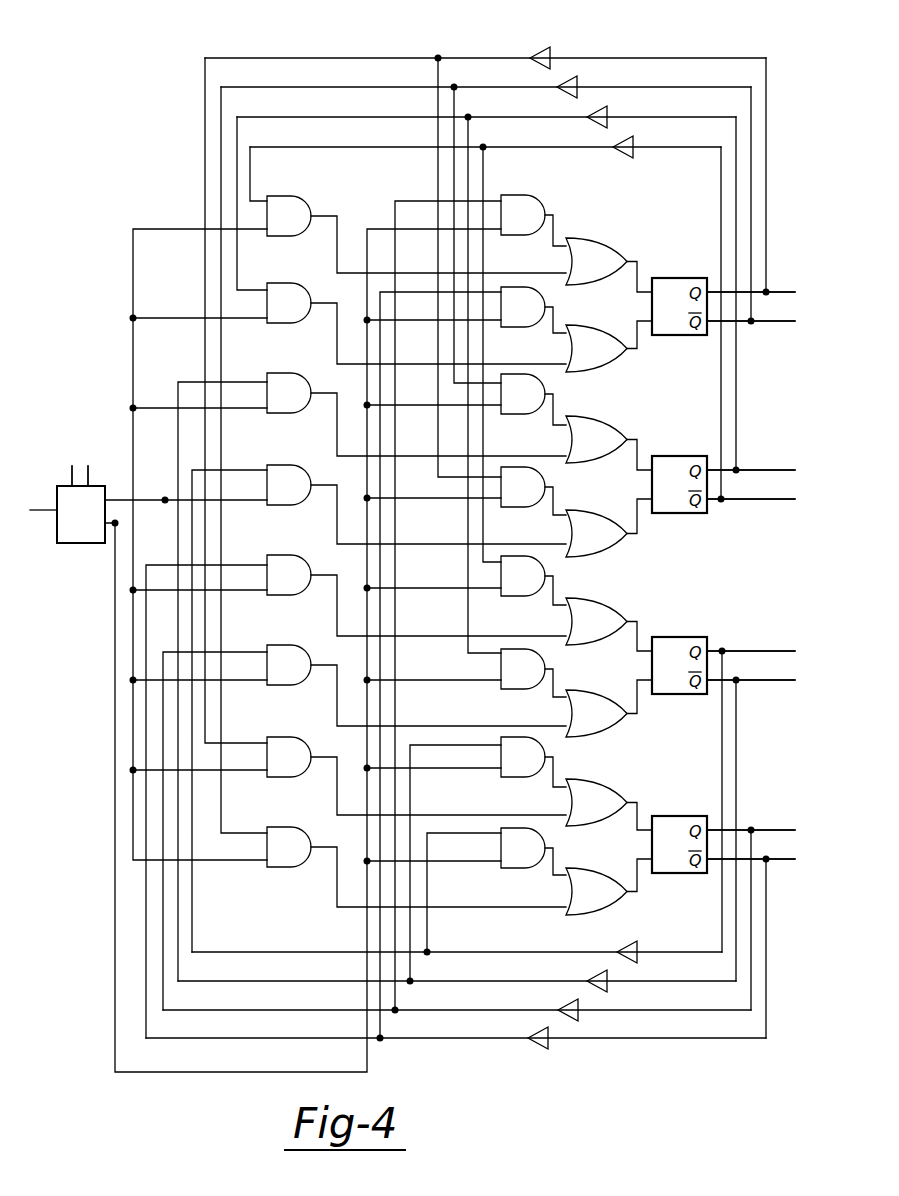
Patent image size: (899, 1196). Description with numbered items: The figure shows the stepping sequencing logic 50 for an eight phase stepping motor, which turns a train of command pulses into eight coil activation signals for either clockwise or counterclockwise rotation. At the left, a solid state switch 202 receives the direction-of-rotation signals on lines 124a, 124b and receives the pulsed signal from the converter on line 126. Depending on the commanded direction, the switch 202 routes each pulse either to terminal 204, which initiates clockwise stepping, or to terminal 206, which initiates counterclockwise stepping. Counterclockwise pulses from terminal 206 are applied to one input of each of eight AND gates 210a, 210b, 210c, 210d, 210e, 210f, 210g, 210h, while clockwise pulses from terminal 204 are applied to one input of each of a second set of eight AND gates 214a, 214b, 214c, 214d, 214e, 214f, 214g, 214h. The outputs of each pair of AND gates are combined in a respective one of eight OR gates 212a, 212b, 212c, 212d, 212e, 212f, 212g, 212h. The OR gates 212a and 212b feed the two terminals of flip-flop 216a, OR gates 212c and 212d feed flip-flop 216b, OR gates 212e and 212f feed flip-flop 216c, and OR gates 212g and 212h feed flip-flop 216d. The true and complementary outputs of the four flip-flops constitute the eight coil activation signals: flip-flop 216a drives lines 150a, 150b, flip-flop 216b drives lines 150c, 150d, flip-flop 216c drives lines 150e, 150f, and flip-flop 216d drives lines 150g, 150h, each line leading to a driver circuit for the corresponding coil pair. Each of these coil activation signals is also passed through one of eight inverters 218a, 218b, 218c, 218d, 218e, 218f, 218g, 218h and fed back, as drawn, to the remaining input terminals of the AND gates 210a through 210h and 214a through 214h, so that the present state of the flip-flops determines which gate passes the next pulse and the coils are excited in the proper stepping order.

The decoder circuit 50 is at (134, 135).
The solid state switch 202 is at (96, 529).
The line 124a is at (72, 466).
The line 124b is at (100, 456).
The line 126 is at (38, 512).
The terminal 204 is at (118, 523).
The terminal 206 is at (165, 499).
The AND gate 210a is at (338, 187).
The AND gate 210b is at (305, 273).
The AND gate 210c is at (303, 361).
The AND gate 210d is at (304, 453).
The AND gate 210e is at (300, 543).
The AND gate 210f is at (294, 633).
The AND gate 210g is at (290, 724).
The AND gate 210h is at (288, 814).
The AND gate 214a is at (545, 187).
The AND gate 214b is at (510, 327).
The AND gate 214c is at (510, 414).
The AND gate 214d is at (510, 507).
The AND gate 214e is at (510, 596).
The AND gate 214f is at (505, 689).
The AND gate 214g is at (505, 777).
The AND gate 214h is at (505, 868).
The OR gate 212a is at (597, 241).
The OR gate 212b is at (596, 348).
The OR gate 212c is at (596, 439).
The OR gate 212d is at (596, 533).
The OR gate 212e is at (596, 621).
The OR gate 212f is at (596, 713).
The OR gate 212g is at (596, 802).
The OR gate 212h is at (596, 891).
The flip-flop 216a is at (685, 265).
The flip-flop 216b is at (660, 514).
The flip-flop 216c is at (668, 695).
The flip-flop 216d is at (680, 810).
The inverter 218a is at (528, 56).
The inverter 218b is at (578, 86).
The inverter 218c is at (608, 117).
The inverter 218d is at (635, 150).
The inverter 218e is at (658, 942).
The inverter 218f is at (607, 979).
The inverter 218g is at (580, 1013).
The inverter 218h is at (535, 1049).
The line 150a is at (770, 296).
The line 150b is at (787, 323).
The line 150c is at (772, 468).
The line 150d is at (750, 501).
The line 150e is at (765, 632).
The line 150f is at (760, 682).
The line 150g is at (784, 828).
The line 150h is at (778, 857).